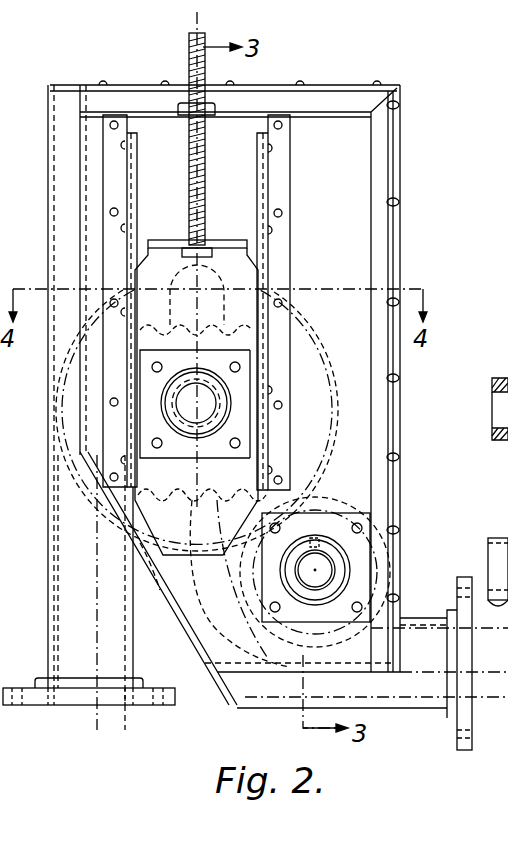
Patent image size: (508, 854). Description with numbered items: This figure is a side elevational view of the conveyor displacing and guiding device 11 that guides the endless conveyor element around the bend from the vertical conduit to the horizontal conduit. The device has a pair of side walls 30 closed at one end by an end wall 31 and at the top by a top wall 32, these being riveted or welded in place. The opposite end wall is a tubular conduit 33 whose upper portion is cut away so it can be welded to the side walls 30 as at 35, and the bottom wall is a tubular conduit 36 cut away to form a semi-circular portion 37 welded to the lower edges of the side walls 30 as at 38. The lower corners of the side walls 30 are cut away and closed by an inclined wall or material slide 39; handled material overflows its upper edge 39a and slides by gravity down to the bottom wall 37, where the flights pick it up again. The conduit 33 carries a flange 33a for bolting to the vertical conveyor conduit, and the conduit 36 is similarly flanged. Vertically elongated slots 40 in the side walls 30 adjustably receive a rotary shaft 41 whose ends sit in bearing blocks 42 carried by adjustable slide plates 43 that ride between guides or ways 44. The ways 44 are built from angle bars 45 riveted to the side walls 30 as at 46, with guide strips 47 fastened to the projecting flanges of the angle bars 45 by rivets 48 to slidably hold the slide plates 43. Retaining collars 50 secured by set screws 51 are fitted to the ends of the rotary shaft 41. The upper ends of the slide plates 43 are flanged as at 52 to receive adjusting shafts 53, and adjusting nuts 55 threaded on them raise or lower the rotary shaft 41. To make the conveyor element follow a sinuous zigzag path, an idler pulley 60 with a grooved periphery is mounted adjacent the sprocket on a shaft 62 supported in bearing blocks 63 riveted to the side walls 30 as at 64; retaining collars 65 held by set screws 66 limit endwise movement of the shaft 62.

The conveyor displacing and guiding device 11 is at (252, 361).
The side walls 30 is at (352, 234).
The end wall 31 is at (400, 261).
The top wall 32 is at (310, 84).
The tubular conduit 33 is at (67, 565).
The flange 33a is at (27, 706).
The weld 35 is at (80, 265).
The tubular conduit 36 is at (413, 690).
The semi-circular portion 37 is at (244, 704).
The weld 38 is at (320, 672).
The inclined wall or material slide 39 is at (187, 645).
The upper edge 39a is at (152, 548).
The elongated slots 40 is at (285, 308).
The rotary shaft 41 is at (190, 402).
The bearing blocks 42 is at (237, 423).
The adjustable slide plates 43 is at (157, 515).
The guides or ways 44 is at (125, 172).
The angle bars 45 is at (110, 195).
The rivets 46 is at (110, 303).
The guide strips 47 is at (128, 183).
The rivets 48 is at (120, 230).
The retaining collars 50 is at (500, 441).
The set screws 51 is at (500, 371).
The flange 52 is at (225, 242).
The adjusting shafts 53 is at (204, 168).
The adjusting nuts 55 is at (178, 104).
The idler pulley 60 is at (305, 648).
The shaft 62 is at (325, 558).
The bearing blocks 63 is at (322, 518).
The rivets 64 is at (357, 526).
The retaining collars 65 is at (337, 586).
The set screws 66 is at (483, 543).